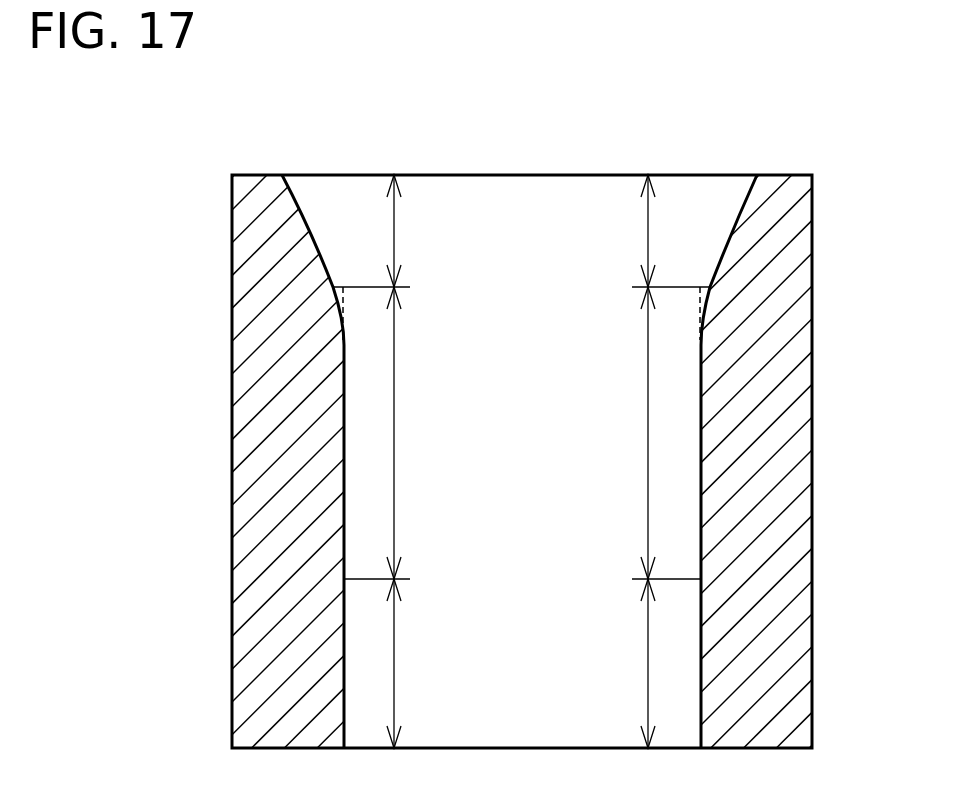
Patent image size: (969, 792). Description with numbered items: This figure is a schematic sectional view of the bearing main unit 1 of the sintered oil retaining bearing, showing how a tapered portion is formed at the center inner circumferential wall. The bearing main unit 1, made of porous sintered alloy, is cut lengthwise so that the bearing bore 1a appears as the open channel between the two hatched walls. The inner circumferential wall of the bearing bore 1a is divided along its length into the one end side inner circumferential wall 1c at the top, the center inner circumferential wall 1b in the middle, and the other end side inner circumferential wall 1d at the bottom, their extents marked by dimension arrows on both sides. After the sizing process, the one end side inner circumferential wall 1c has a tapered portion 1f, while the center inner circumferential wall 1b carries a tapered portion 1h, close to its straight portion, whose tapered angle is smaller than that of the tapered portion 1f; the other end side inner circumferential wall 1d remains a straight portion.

The bearing main unit 1 is at (787, 449).
The bearing bore 1a is at (504, 195).
The center inner circumferential wall 1b is at (522, 433).
The one end side inner circumferential wall 1c is at (521, 231).
The other end side inner circumferential wall 1d is at (521, 663).
The tapered portion 1f is at (303, 220).
The tapered portion 1h is at (342, 322).